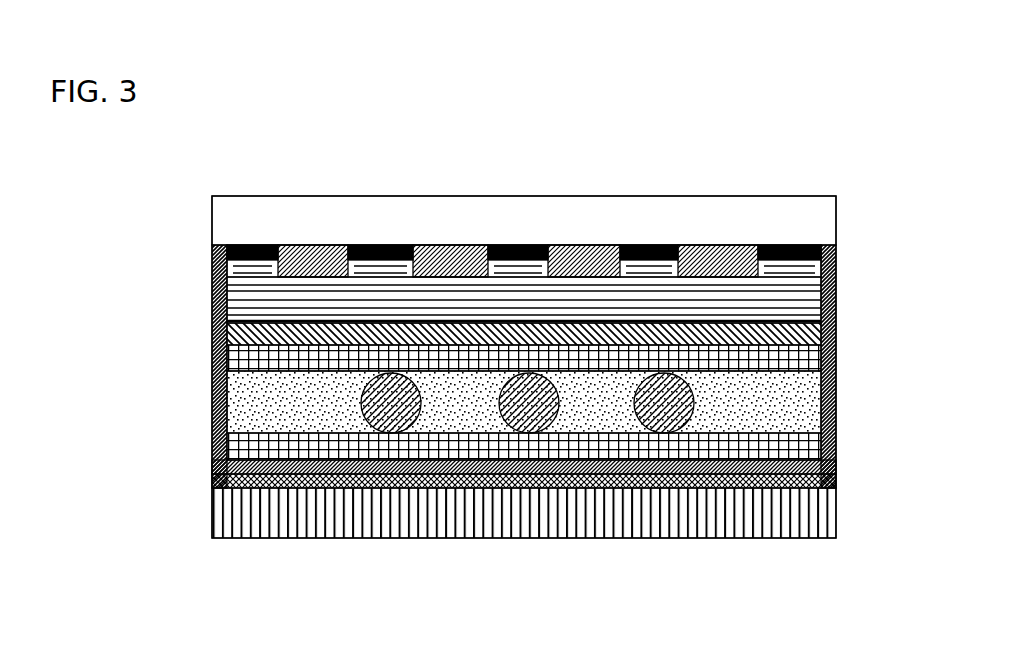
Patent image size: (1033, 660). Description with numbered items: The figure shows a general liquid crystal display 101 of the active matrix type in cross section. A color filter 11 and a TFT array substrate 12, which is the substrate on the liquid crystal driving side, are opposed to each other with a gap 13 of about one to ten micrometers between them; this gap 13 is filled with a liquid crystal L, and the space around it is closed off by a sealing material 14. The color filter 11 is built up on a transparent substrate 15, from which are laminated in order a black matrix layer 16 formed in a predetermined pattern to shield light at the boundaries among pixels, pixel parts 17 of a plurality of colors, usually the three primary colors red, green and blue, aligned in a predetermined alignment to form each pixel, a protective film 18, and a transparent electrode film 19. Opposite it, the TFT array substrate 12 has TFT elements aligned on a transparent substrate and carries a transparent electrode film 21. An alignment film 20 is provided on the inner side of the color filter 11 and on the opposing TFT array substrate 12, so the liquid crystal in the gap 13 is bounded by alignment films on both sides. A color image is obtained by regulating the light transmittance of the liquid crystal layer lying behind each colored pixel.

The liquid crystal display 101 is at (208, 176).
The color filter 11 is at (527, 383).
The TFT array substrate 12 is at (204, 466).
The gap 13 is at (465, 410).
The sealing material 14 is at (578, 498).
The transparent substrate 15 is at (800, 223).
The black matrix layer 16 is at (653, 237).
The pixel parts 17 is at (743, 240).
The protective film 18 is at (800, 302).
The transparent electrode film 19 is at (828, 327).
The alignment film 20 is at (828, 353).
The transparent electrode film 21 is at (577, 490).